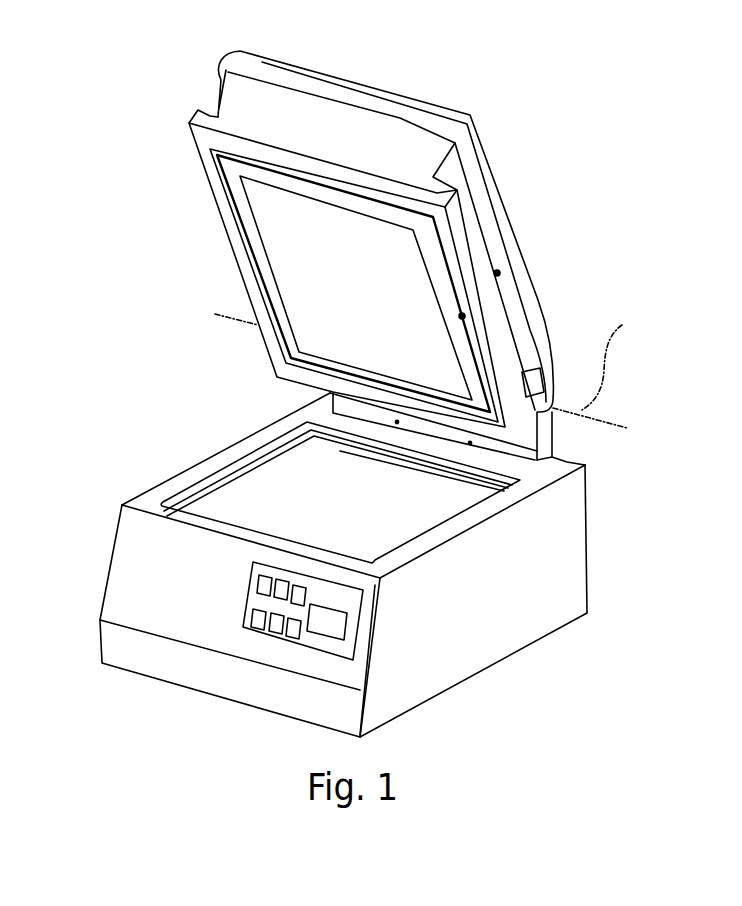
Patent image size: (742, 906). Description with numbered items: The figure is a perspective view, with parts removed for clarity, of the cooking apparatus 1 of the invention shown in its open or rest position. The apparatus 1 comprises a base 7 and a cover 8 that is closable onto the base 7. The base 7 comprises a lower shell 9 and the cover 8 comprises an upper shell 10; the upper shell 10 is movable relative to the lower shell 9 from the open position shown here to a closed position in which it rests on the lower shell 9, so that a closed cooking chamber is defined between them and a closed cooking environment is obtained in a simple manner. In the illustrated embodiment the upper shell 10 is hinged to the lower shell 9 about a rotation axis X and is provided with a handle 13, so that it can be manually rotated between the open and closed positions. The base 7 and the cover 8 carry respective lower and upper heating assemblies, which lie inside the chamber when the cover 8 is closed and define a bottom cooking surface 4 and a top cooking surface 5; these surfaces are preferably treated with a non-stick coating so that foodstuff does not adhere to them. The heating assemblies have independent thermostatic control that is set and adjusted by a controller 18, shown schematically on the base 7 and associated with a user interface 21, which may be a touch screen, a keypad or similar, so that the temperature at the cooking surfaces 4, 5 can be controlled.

The cooking apparatus 1 is at (547, 173).
The bottom cooking surface 4 is at (320, 289).
The top cooking surface 5 is at (268, 492).
The base 7 is at (597, 540).
The cover 8 is at (197, 220).
The lower shell 9 is at (495, 598).
The upper shell 10 is at (292, 117).
The handle 13 is at (220, 78).
The controller 18 is at (343, 650).
The user interface 21 is at (247, 602).